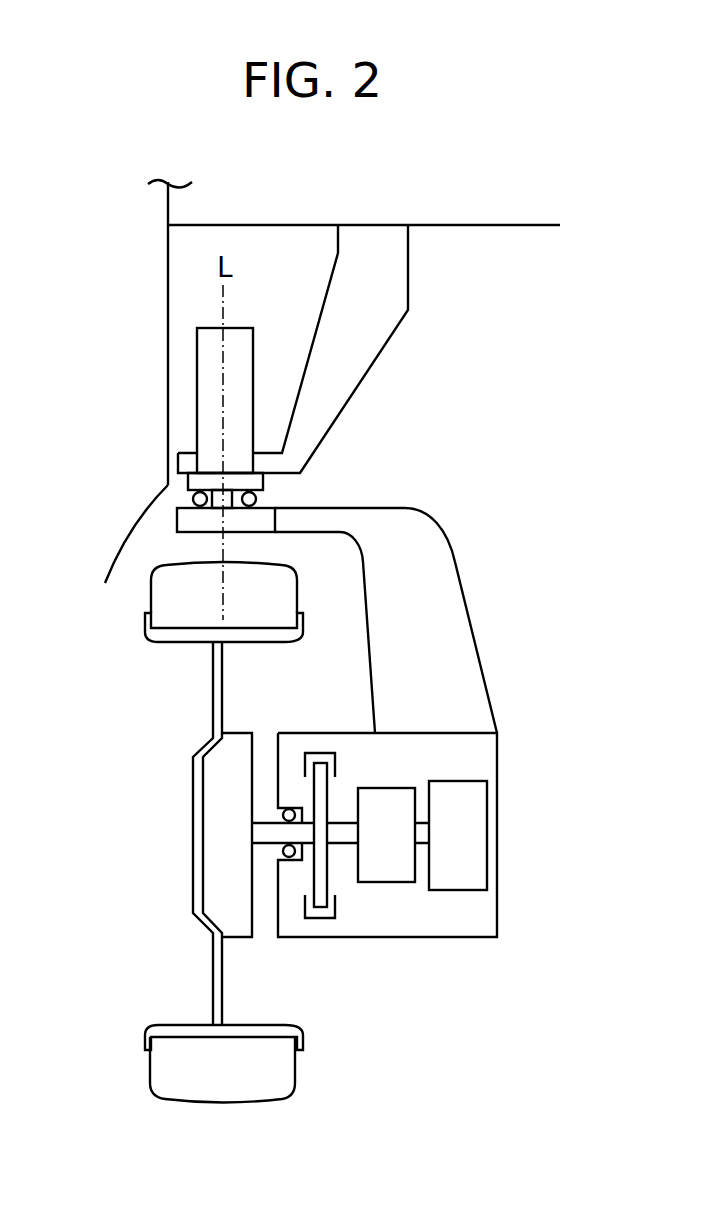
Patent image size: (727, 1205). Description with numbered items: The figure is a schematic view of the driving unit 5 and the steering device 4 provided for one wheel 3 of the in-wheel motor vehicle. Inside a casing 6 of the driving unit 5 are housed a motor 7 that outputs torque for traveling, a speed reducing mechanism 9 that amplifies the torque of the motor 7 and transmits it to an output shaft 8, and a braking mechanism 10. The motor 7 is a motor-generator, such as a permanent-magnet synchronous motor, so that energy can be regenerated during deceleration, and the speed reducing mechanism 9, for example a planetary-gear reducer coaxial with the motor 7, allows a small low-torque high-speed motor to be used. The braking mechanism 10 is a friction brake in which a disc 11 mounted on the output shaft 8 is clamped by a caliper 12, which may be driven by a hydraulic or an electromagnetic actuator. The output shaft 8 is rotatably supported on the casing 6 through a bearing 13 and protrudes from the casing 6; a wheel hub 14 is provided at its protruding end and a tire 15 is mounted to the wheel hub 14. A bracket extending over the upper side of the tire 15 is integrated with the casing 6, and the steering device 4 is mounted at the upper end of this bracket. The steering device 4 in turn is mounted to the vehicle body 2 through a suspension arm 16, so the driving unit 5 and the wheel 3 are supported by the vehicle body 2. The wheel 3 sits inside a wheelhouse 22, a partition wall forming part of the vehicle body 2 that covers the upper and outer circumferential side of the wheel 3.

The vehicle body 2 is at (166, 338).
The wheel 3 is at (142, 660).
The steering device 4 is at (197, 330).
The driving unit 5 is at (429, 722).
The casing 6 is at (497, 897).
The motor 7 is at (460, 781).
The output shaft 8 is at (345, 847).
The speed reducing mechanism 9 is at (398, 882).
The braking mechanism 10 is at (322, 921).
The disc 11 is at (313, 788).
The caliper 12 is at (313, 752).
The bearing 13 is at (282, 852).
The wheel hub 14 is at (217, 822).
The tire 15 is at (219, 1087).
The suspension arm 16 is at (355, 388).
The wheelhouse 22 is at (132, 530).